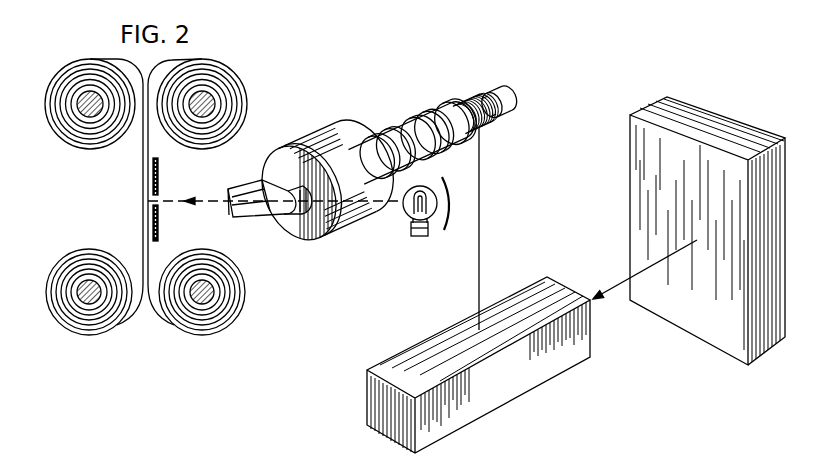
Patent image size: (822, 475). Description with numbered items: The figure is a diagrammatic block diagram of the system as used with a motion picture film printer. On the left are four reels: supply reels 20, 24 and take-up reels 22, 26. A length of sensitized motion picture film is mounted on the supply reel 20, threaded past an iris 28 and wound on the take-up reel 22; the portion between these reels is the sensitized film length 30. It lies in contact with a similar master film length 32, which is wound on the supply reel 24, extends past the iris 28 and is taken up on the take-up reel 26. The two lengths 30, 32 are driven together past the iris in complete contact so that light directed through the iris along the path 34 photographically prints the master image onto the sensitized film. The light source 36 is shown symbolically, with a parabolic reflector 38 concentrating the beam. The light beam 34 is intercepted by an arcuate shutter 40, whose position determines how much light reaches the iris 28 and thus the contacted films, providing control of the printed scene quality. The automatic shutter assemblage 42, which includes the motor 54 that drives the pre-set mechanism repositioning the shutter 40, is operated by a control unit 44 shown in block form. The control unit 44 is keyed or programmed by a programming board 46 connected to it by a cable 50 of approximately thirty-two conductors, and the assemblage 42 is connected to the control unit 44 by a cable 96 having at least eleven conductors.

The supply reel 20 is at (85, 94).
The take-up reel 22 is at (87, 302).
The supply reel 24 is at (213, 102).
The take-up reel 26 is at (207, 302).
The iris 28 is at (161, 198).
The sensitized film length 30 is at (143, 233).
The master film length 32 is at (150, 252).
The light path 34 is at (207, 203).
The light source 36 is at (403, 212).
The parabolic reflector 38 is at (447, 228).
The arcuate shutter 40 is at (246, 205).
The automatic shutter assemblage 42 is at (226, 175).
The control unit 44 is at (518, 383).
The programming board 46 is at (708, 122).
The cable 50 is at (615, 284).
The motor 54 is at (495, 94).
The cable 96 is at (481, 244).